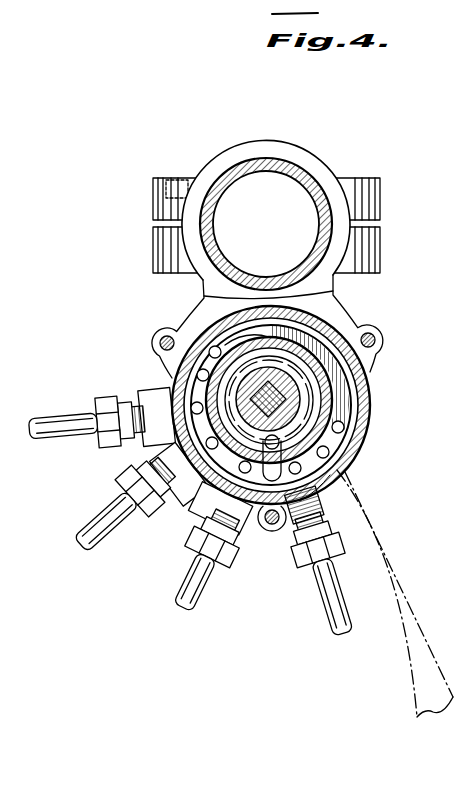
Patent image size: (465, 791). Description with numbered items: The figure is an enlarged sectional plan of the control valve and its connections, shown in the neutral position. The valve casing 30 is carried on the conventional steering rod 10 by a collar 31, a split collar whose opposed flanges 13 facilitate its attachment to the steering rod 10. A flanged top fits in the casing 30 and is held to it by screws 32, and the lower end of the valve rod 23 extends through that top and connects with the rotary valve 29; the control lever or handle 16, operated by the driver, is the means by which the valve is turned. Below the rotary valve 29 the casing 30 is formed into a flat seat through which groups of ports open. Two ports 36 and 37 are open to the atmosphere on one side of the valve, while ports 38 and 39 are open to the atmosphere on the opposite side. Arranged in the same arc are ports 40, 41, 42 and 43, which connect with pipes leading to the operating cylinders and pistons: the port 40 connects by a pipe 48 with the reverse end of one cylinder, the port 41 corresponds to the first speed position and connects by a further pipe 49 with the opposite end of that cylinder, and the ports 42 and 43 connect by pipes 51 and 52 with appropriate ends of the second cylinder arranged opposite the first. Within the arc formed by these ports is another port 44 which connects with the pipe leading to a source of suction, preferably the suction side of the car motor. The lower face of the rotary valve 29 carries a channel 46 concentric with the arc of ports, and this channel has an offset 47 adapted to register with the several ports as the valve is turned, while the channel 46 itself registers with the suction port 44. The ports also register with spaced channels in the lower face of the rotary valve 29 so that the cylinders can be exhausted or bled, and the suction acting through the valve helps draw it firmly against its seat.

The steering rod 10 is at (292, 170).
The collar 31 is at (322, 174).
The opposed flanges 13 is at (157, 213).
The port 38 is at (200, 337).
The valve rod 23 is at (305, 362).
The screws 32 is at (373, 336).
The channel 46 is at (334, 380).
The casing 30 is at (371, 389).
The rotary valve 29 is at (345, 397).
The port 36 is at (344, 428).
The port 37 is at (350, 448).
The port 44 is at (350, 458).
The port 40 is at (340, 473).
The port 43 is at (177, 387).
The port 39 is at (177, 372).
The port 42 is at (190, 443).
The pipe 52 is at (54, 437).
The pipe 51 is at (104, 541).
The port 41 is at (201, 500).
The offset 47 is at (267, 482).
The plunger 49 is at (203, 596).
The pipe 48 is at (333, 604).
The control lever or handle 16 is at (406, 598).